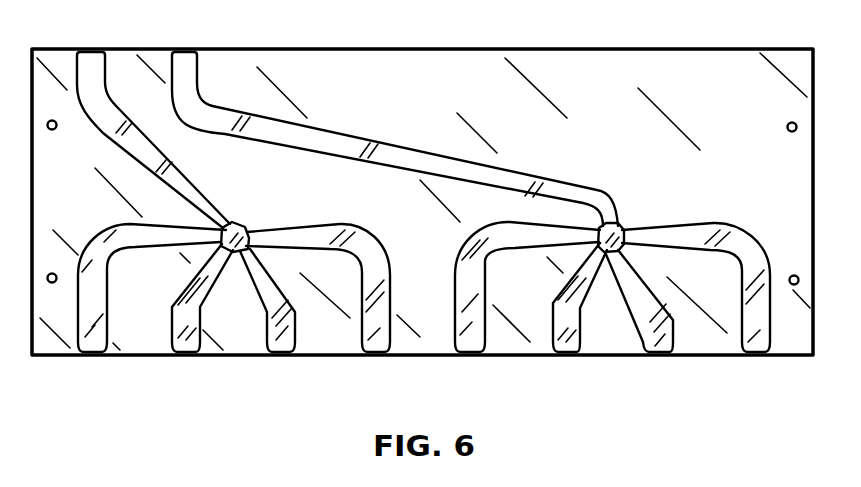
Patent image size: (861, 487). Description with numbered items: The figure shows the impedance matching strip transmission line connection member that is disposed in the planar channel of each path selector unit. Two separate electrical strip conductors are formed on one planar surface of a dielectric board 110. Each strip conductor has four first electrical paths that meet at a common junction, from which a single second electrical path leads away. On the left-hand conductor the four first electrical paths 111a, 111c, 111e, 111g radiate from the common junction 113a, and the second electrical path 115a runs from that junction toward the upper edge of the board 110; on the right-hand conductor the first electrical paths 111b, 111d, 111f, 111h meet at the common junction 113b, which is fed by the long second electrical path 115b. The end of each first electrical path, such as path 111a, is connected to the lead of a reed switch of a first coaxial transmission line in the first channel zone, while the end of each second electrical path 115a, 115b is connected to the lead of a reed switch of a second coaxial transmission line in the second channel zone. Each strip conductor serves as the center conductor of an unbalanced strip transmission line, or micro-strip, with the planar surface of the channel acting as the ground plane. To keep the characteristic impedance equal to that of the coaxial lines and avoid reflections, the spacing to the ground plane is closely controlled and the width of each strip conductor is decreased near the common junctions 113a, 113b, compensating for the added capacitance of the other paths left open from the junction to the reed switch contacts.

The dielectric board 110 is at (240, 356).
The first electrical path 111a is at (110, 228).
The first electrical path 111b is at (456, 266).
The first electrical path 111c is at (180, 287).
The first electrical path 111d is at (556, 292).
The first electrical path 111e is at (254, 287).
The first electrical path 111f is at (643, 303).
The first electrical path 111g is at (361, 269).
The first electrical path 111h is at (741, 280).
The common junction 113a is at (242, 227).
The common junction 113b is at (618, 226).
The second electrical path 115a is at (107, 137).
The second electrical path 115b is at (323, 128).